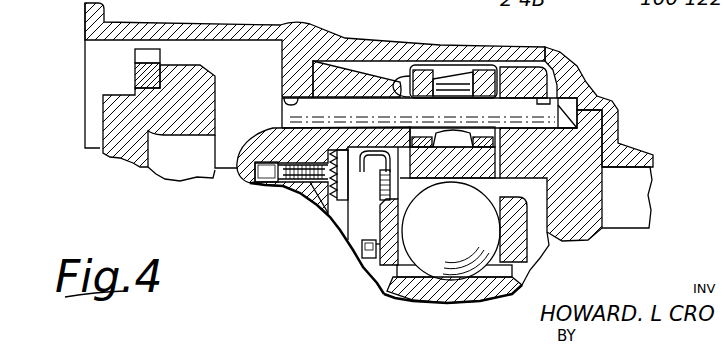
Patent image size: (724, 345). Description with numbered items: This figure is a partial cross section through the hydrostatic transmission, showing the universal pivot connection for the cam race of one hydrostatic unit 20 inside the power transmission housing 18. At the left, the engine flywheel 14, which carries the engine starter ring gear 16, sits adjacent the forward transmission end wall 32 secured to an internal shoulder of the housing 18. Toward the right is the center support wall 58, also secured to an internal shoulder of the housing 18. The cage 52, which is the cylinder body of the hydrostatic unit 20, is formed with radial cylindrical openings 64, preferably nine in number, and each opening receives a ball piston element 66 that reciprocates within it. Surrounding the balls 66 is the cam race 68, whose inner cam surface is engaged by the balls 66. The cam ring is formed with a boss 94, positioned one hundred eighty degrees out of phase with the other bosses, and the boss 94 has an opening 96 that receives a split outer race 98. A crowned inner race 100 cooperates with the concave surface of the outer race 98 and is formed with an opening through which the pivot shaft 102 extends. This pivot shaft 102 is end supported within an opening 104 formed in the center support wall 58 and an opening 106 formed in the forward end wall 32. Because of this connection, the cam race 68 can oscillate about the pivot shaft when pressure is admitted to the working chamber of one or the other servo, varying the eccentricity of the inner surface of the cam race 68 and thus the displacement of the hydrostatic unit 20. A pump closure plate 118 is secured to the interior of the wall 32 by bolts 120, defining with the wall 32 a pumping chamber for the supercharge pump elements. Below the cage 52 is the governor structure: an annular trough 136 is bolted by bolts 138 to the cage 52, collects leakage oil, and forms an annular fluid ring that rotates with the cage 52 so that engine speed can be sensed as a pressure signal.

The engine flywheel 14 is at (107, 107).
The engine starter ring gear 16 is at (133, 70).
The power transmission housing 18 is at (197, 10).
The hydrostatic unit 20 is at (462, 287).
The forward transmission end wall 32 is at (258, 142).
The cage 52 is at (380, 284).
The center support wall 58 is at (523, 70).
The radial cylindrical openings 64 is at (527, 260).
The ball piston element 66 is at (420, 295).
The cam race 68 is at (495, 168).
The boss 94 is at (483, 67).
The opening 96 is at (392, 80).
The split outer race 98 is at (454, 231).
The crowned inner race 100 is at (447, 73).
The pivot shaft 102 is at (347, 100).
The opening 104 is at (540, 100).
The opening 106 is at (282, 99).
The pump closure plate 118 is at (326, 207).
The bolts 120 is at (328, 205).
The annular trough 136 is at (383, 175).
The bolts 138 is at (362, 258).